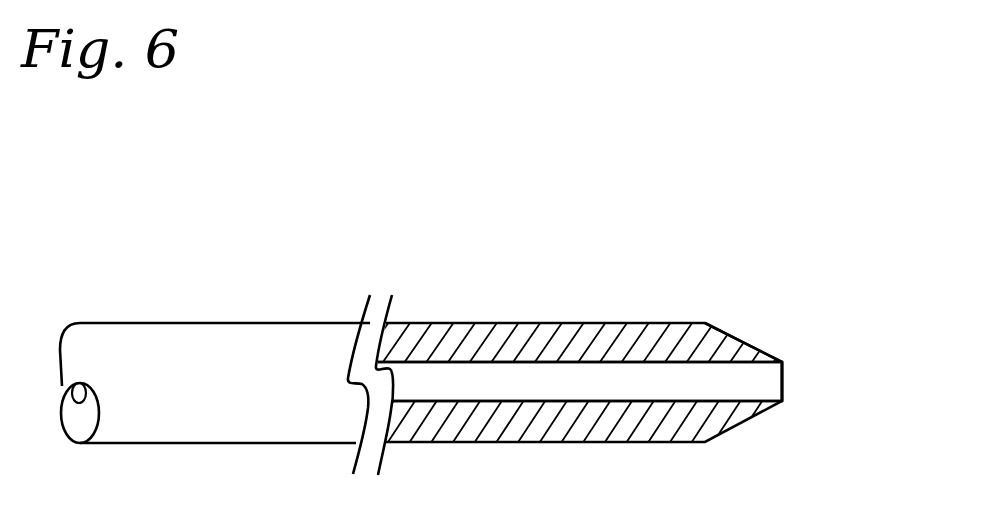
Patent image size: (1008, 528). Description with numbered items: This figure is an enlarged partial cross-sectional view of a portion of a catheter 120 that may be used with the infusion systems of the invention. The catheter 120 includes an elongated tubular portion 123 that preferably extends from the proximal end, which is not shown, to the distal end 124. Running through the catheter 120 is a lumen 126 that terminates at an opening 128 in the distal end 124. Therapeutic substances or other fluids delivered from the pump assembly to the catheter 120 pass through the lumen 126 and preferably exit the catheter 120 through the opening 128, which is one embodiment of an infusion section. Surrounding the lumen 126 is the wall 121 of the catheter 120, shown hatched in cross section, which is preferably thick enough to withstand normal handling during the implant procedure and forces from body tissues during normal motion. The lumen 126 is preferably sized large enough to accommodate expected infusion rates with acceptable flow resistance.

The catheter 120 is at (478, 345).
The wall 121 is at (538, 432).
The elongated tubular portion 123 is at (235, 323).
The distal end 124 is at (783, 360).
The lumen 126 is at (578, 383).
The opening 128 is at (783, 385).